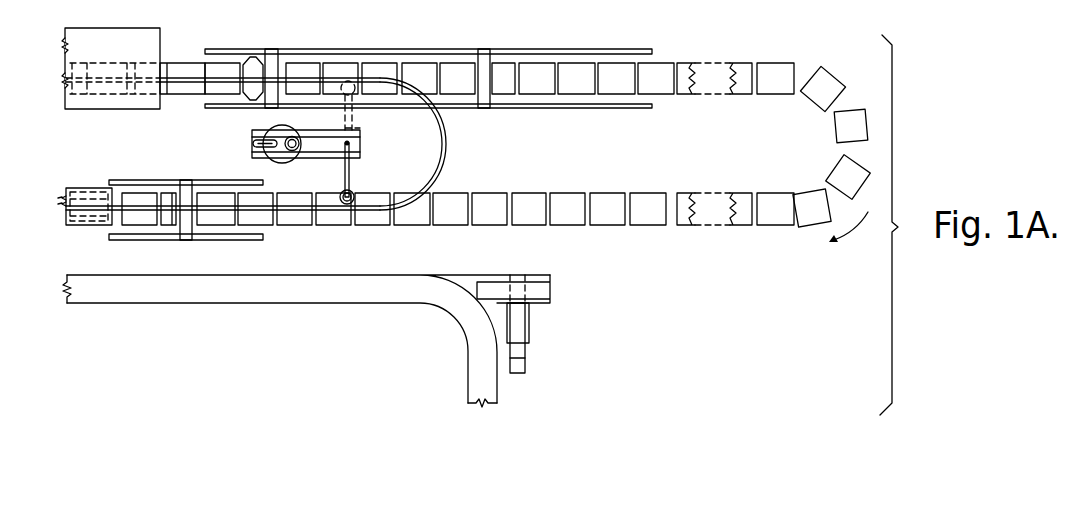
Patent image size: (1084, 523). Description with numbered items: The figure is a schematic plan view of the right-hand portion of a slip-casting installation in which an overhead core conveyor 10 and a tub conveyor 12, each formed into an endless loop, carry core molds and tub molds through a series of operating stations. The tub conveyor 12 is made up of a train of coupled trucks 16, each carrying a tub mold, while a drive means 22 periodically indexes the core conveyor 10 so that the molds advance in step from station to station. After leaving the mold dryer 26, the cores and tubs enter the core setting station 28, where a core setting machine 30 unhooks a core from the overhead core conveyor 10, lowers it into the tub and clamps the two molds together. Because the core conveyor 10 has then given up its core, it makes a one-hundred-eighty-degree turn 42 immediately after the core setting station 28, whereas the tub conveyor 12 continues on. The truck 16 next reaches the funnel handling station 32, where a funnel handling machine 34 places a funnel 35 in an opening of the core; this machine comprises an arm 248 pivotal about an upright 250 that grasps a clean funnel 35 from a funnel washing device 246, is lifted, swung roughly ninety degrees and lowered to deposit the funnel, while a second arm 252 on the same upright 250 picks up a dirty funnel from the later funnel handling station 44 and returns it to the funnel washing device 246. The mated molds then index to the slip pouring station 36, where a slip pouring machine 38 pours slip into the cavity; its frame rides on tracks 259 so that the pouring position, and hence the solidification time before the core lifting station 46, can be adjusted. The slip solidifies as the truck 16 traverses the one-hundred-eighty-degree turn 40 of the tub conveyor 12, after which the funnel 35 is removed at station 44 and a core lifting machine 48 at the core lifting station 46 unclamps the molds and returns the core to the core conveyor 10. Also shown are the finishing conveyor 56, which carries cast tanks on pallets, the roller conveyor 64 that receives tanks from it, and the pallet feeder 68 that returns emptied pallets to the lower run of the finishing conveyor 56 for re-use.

The overhead core conveyor 10 is at (458, 137).
The tub conveyor 12 is at (777, 56).
The truck 16 is at (833, 80).
The drive means 22 is at (85, 188).
The mold dryer 26 is at (117, 28).
The core setting station 28 is at (280, 60).
The core setting machine 30 is at (270, 49).
The funnel handling station 32 is at (340, 63).
The funnel handling machine 34 is at (252, 152).
The funnel 35 is at (297, 137).
The slip pouring station 36 is at (497, 63).
The slip pouring machine 38 is at (480, 50).
The 180° turn 40 is at (835, 128).
The 180° turn 42 is at (446, 158).
The funnel handling station 44 is at (337, 225).
The core lifting station 46 is at (163, 225).
The core lifting machine 48 is at (184, 180).
The finishing conveyor 56 is at (475, 276).
The roller conveyor 64 is at (242, 304).
The pallet feeder 68 is at (529, 334).
The funnel washing device 246 is at (280, 126).
The arm 248 is at (318, 148).
The upright 250 is at (362, 147).
The second arm 252 is at (352, 173).
The tracks 259 is at (523, 108).